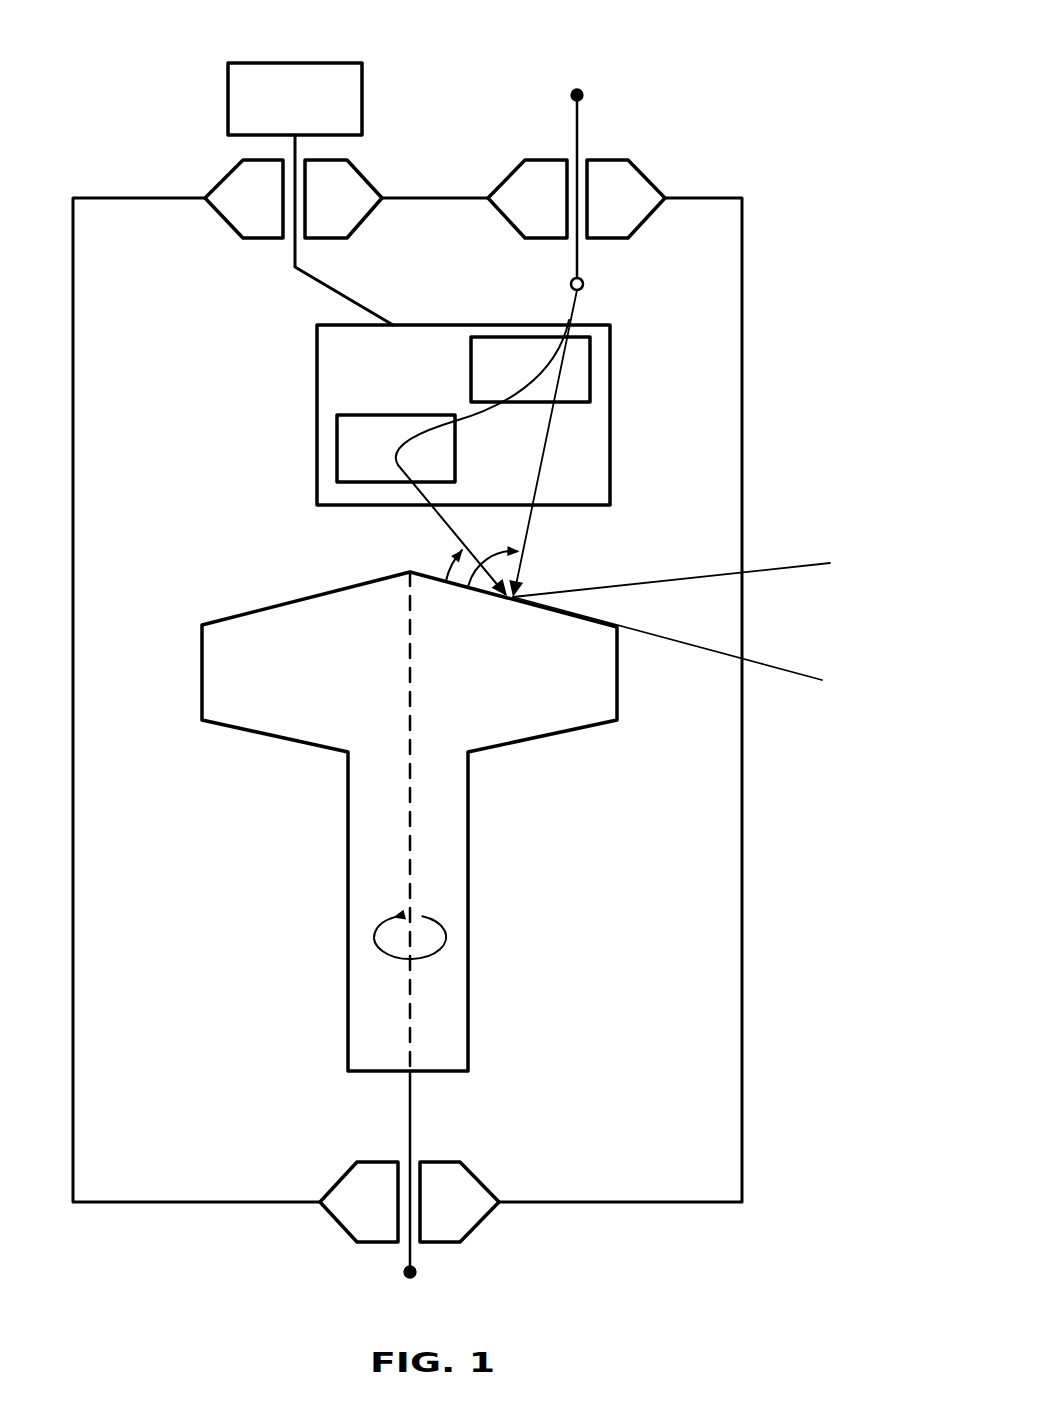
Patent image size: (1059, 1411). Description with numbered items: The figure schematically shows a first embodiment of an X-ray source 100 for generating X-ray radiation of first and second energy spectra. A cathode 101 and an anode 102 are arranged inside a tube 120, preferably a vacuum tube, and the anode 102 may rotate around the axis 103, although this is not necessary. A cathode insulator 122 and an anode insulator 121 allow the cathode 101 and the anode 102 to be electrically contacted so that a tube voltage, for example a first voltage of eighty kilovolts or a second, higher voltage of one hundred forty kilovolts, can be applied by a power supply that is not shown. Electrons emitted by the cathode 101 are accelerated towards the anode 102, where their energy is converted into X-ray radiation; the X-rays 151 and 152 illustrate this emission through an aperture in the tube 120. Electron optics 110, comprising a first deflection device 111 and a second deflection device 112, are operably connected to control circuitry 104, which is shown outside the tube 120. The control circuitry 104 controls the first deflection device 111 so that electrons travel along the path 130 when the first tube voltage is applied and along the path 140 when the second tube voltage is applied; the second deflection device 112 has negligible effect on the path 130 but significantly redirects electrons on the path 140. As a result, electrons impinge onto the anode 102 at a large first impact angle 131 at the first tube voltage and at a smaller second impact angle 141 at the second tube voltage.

The X-ray source 100 is at (150, 108).
The cathode 101 is at (584, 281).
The anode 102 is at (622, 688).
The axis 103 is at (418, 828).
The control circuitry 104 is at (362, 102).
The electron optics 110 is at (317, 363).
The first deflection device 111 is at (590, 373).
The second deflection device 112 is at (337, 445).
The tube 120 is at (742, 970).
The anode insulator 121 is at (492, 1222).
The cathode insulator 122 is at (647, 177).
The path 130 is at (542, 460).
The first impact angle 131 is at (500, 550).
The path 140 is at (410, 488).
The second impact angle 141 is at (446, 578).
The X-rays 151 is at (790, 565).
The X-rays 152 is at (790, 675).